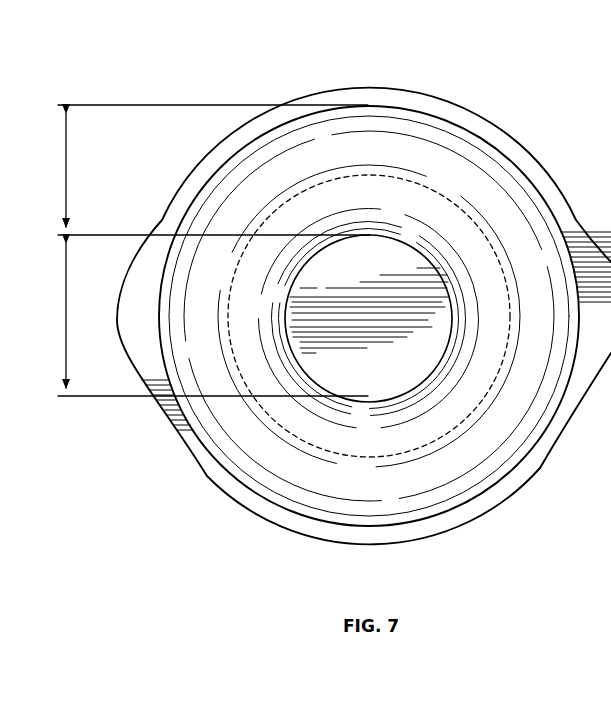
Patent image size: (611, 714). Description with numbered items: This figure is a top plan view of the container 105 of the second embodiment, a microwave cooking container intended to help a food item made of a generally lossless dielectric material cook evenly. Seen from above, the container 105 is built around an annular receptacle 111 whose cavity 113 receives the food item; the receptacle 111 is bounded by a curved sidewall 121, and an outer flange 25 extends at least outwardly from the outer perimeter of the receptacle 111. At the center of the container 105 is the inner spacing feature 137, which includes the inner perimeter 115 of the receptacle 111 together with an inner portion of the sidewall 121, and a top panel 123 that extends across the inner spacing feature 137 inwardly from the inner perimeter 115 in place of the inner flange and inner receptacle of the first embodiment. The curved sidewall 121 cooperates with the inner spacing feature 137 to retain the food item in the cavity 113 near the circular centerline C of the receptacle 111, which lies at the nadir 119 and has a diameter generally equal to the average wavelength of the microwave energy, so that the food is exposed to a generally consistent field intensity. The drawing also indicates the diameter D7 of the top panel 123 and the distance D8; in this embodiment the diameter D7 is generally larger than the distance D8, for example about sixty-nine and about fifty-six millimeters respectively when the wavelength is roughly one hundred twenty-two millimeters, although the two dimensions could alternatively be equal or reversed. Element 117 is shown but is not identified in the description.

The container 105 is at (556, 123).
The outer flange 25 is at (203, 168).
The receptacle 111 is at (552, 429).
The annular wall 117 is at (410, 526).
The sidewall 121 is at (560, 337).
The cavity 113 is at (258, 443).
The nadir 119 is at (318, 180).
The centerline C is at (297, 433).
The inner perimeter 115 is at (448, 342).
The inner spacing feature 137 is at (415, 237).
The top panel 123 is at (316, 288).
The distance D8 is at (211, 170).
The diameter of the top panel D7 is at (210, 319).